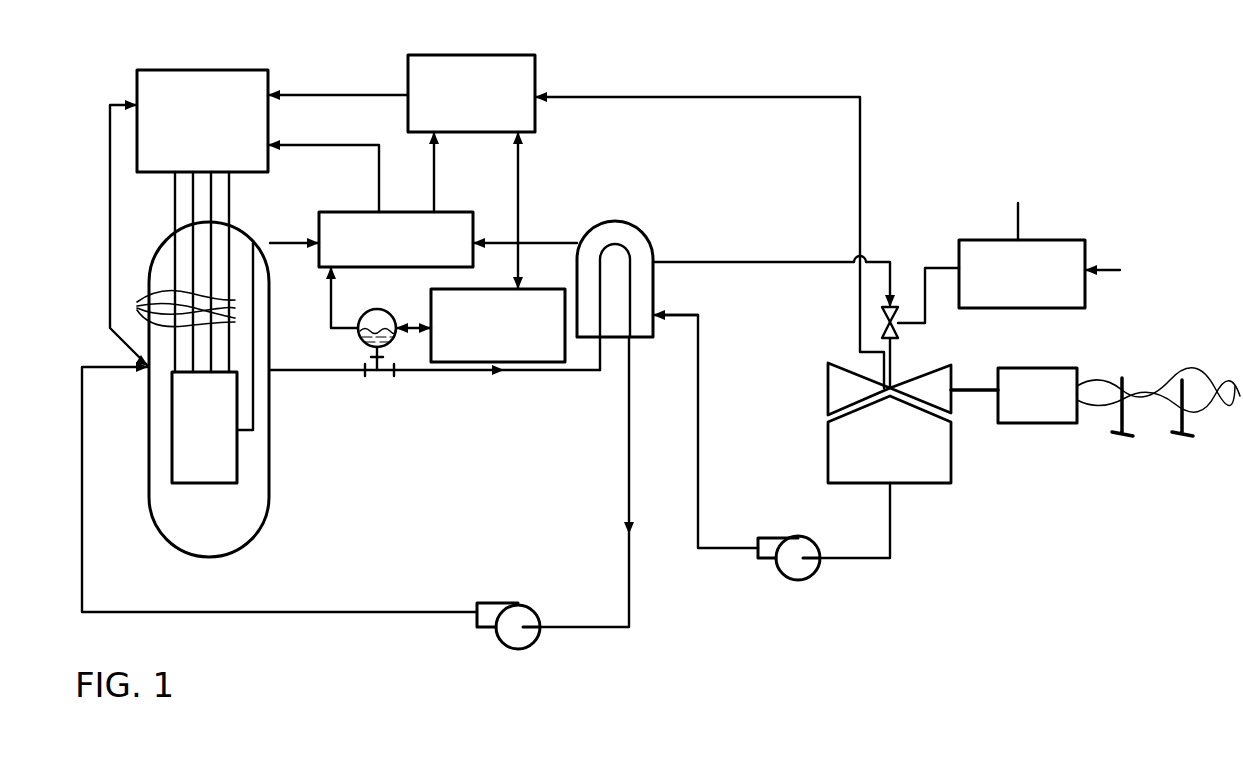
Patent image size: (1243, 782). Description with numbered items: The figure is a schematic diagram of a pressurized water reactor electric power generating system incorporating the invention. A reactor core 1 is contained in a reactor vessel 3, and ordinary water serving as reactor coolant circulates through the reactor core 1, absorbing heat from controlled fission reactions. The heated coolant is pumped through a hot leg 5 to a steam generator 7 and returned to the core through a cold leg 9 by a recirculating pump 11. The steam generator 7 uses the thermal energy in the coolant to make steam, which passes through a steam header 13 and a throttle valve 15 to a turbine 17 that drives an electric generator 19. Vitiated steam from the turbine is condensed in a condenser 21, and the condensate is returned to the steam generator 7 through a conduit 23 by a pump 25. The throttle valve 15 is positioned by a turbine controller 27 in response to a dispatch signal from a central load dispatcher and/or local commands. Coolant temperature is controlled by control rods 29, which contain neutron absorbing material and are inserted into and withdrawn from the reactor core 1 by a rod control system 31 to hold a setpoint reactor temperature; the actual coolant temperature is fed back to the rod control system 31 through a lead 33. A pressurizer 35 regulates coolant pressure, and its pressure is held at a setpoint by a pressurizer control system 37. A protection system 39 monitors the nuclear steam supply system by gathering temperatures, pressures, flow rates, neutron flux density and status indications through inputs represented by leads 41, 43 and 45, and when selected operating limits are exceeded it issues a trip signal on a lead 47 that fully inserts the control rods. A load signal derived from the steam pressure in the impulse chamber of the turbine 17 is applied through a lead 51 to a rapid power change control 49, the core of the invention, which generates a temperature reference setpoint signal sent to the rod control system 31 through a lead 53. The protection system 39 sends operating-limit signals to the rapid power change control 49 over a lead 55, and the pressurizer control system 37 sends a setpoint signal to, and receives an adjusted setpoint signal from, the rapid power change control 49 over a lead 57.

The reactor core 1 is at (222, 457).
The reactor vessel 3 is at (272, 430).
The hot leg 5 is at (428, 370).
The steam generator 7 is at (656, 312).
The cold leg 9 is at (628, 487).
The recirculating pump 11 is at (500, 605).
The steam header 13 is at (745, 262).
The throttle valve 15 is at (900, 310).
The turbine 17 is at (925, 368).
The electric generator 19 is at (1040, 368).
The condenser 21 is at (938, 470).
The conduit 23 is at (698, 428).
The pump 25 is at (800, 572).
The turbine controller 27 is at (1062, 240).
The control rods 29 is at (140, 300).
The rod control system 31 is at (226, 70).
The lead 33 is at (108, 190).
The pressurizer 35 is at (362, 343).
The pressurizer control system 37 is at (525, 292).
The protection system 39 is at (460, 212).
The lead 41 is at (548, 243).
The lead 43 is at (288, 243).
The lead 45 is at (331, 318).
The lead 47 is at (379, 192).
The rapid power change control 49 is at (512, 55).
The lead 51 is at (598, 97).
The lead 53 is at (323, 95).
The lead 55 is at (434, 168).
The lead 57 is at (518, 178).